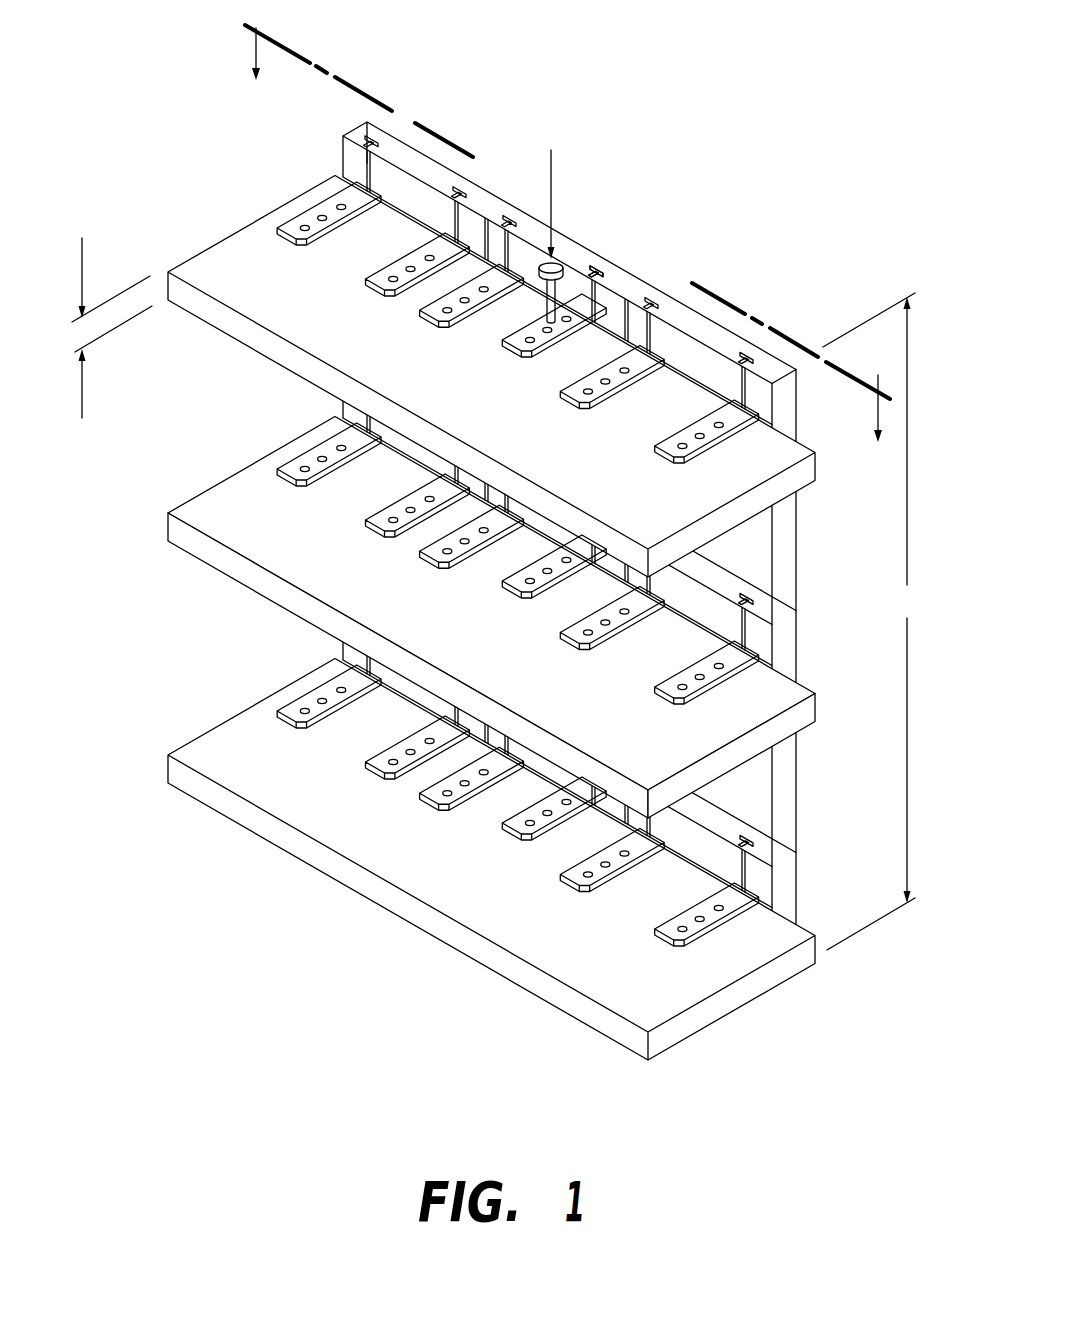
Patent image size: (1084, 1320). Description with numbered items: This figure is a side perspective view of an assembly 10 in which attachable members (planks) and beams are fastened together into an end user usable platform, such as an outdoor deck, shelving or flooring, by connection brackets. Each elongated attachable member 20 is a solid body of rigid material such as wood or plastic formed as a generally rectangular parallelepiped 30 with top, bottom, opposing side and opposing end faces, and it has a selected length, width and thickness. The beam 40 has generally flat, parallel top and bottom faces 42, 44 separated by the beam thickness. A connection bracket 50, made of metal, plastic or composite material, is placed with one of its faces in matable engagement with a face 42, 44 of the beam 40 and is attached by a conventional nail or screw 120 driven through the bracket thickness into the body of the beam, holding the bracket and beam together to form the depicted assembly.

The assembly 10 is at (730, 171).
The attachable member 20 is at (394, 132).
The rectangular parallelepiped 30 is at (601, 257).
The beam 40 is at (466, 618).
The top face 42 is at (257, 503).
The bottom face 44 is at (251, 592).
The connection bracket 50 is at (622, 388).
The nail or screw 120 is at (577, 243).